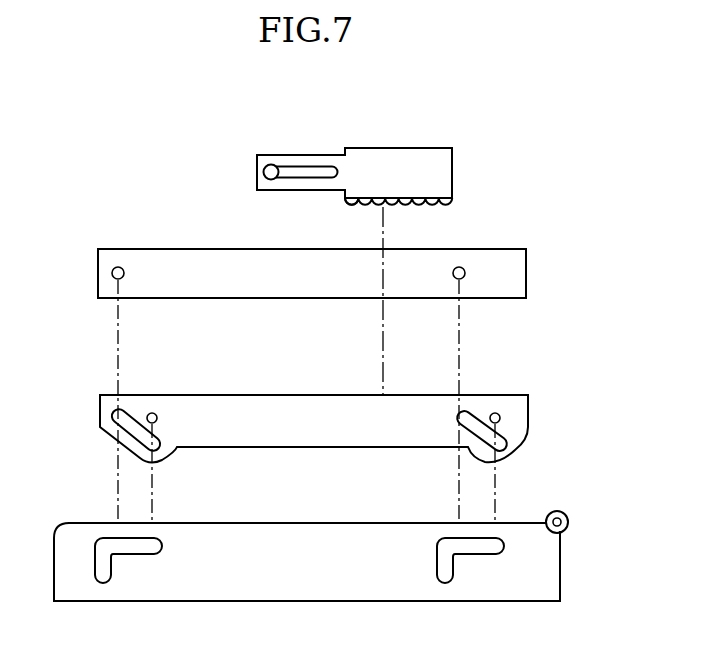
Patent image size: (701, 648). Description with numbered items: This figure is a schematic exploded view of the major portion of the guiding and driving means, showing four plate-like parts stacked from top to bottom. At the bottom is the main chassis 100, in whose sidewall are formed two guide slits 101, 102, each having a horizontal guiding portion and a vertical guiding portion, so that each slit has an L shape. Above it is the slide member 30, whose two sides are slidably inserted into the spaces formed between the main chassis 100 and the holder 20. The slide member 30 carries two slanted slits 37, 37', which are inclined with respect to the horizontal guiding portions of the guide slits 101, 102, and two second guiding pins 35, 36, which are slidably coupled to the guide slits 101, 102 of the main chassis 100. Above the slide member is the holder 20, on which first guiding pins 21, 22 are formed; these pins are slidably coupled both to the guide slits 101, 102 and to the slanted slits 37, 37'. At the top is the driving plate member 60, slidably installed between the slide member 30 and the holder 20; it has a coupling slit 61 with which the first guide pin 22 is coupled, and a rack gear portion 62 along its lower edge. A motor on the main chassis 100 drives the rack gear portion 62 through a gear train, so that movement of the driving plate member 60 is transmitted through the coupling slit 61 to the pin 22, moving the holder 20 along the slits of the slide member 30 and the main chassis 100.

The holder 20 is at (533, 282).
The first guiding pin 21 is at (116, 266).
The first guiding pin 22 is at (463, 268).
The slide member 30 is at (536, 410).
The second guiding pin 35 is at (154, 412).
The second guiding pin 36 is at (497, 412).
The slanted slit 37 is at (105, 435).
The slanted slit 37' is at (458, 396).
The driving plate member 60 is at (457, 166).
The coupling slit 61 is at (300, 172).
The rack gear portion 62 is at (362, 205).
The main chassis 100 is at (568, 550).
The guide slit 101 is at (148, 543).
The guide slit 102 is at (447, 545).